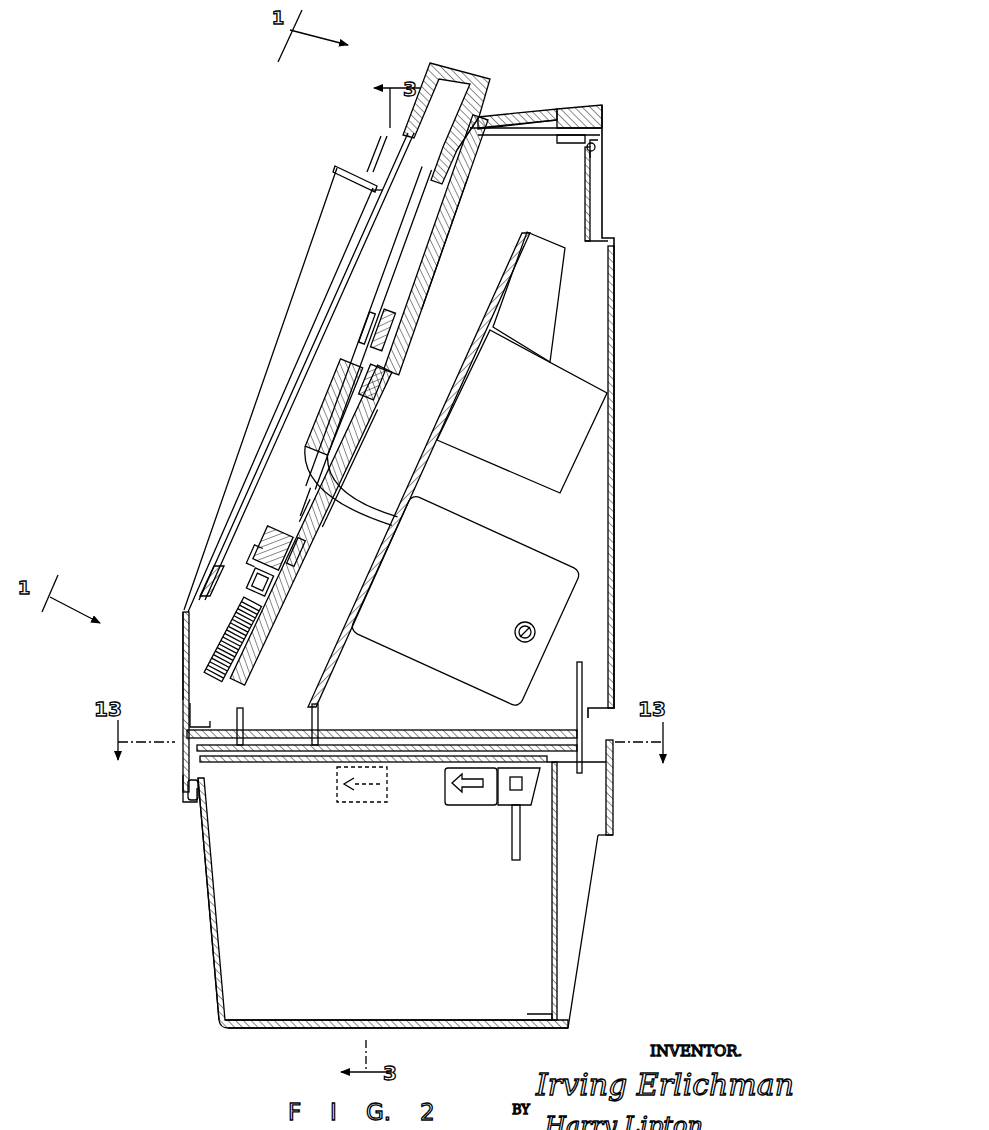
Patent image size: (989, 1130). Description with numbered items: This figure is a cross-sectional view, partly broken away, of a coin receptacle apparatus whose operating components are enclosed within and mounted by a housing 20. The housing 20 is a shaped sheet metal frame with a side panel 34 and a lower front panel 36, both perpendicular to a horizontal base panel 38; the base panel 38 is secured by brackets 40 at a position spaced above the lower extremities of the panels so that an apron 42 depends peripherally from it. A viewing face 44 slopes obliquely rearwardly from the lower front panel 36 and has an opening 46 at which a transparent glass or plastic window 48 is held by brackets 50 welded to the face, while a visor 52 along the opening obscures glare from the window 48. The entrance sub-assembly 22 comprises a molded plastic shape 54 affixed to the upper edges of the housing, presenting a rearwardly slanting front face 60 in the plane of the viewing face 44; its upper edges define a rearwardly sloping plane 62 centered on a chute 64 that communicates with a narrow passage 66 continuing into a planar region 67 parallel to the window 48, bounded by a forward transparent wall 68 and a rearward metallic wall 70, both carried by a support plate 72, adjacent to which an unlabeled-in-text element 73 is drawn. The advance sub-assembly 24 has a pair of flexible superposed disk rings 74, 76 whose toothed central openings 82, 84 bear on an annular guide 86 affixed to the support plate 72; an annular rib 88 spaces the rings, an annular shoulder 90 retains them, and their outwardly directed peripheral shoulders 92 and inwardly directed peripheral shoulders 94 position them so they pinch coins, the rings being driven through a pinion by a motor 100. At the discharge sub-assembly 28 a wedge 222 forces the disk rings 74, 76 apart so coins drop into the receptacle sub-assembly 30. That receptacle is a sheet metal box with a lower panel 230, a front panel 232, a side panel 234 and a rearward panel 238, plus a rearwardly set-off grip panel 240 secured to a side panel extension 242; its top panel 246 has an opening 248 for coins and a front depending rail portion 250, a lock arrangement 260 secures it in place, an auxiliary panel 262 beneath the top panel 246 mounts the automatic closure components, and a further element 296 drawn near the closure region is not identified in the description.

The housing 20 is at (617, 505).
The entrance sub-assembly 22 is at (523, 107).
The advance sub-assembly 24 is at (290, 505).
The discharge sub-assembly 28 is at (353, 438).
The receptacle sub-assembly 30 is at (176, 680).
The side panel 34 is at (205, 905).
The lower front panel 36 is at (182, 693).
The horizontal base panel 38 is at (375, 722).
The bracket 40 is at (199, 714).
The apron 42 is at (183, 762).
The viewing face 44 is at (381, 163).
The opening 46 is at (377, 192).
The window 48 is at (283, 393).
The bracket 50 is at (412, 160).
The visor 52 is at (337, 167).
The molded plastic shape 54 is at (587, 105).
The front face 60 is at (505, 136).
The rearwardly sloping plane 62 is at (486, 77).
The chute 64 is at (522, 101).
The narrow passage 66 is at (472, 151).
The planar region 67 is at (441, 209).
The transparent wall 68 is at (410, 240).
The metallic wall 70 is at (442, 252).
The support plate 72 is at (313, 530).
The screen panel 73 is at (467, 347).
The disk ring 74 is at (367, 322).
The disk ring 76 is at (392, 346).
The central opening 82 is at (282, 530).
The central opening 84 is at (284, 555).
The annular guide 86 is at (322, 505).
The annular rib 88 is at (281, 572).
The annular shoulder 90 is at (262, 550).
The outwardly directed peripheral shoulder 92 is at (248, 582).
The inwardly directed peripheral shoulder 94 is at (246, 614).
The motor 100 is at (518, 566).
The wedge 222 is at (382, 372).
The lower panel 230 is at (433, 1020).
The front panel 232 is at (217, 950).
The side panel 234 is at (380, 918).
The rearward panel 238 is at (553, 897).
The grip panel 240 is at (613, 795).
The extension 242 is at (577, 897).
The top panel 246 is at (412, 758).
The opening 248 is at (277, 750).
The front depending rail portion 250 is at (203, 785).
The lock arrangement 260 is at (602, 712).
The auxiliary panel 262 is at (434, 765).
The slide button 296 is at (483, 790).